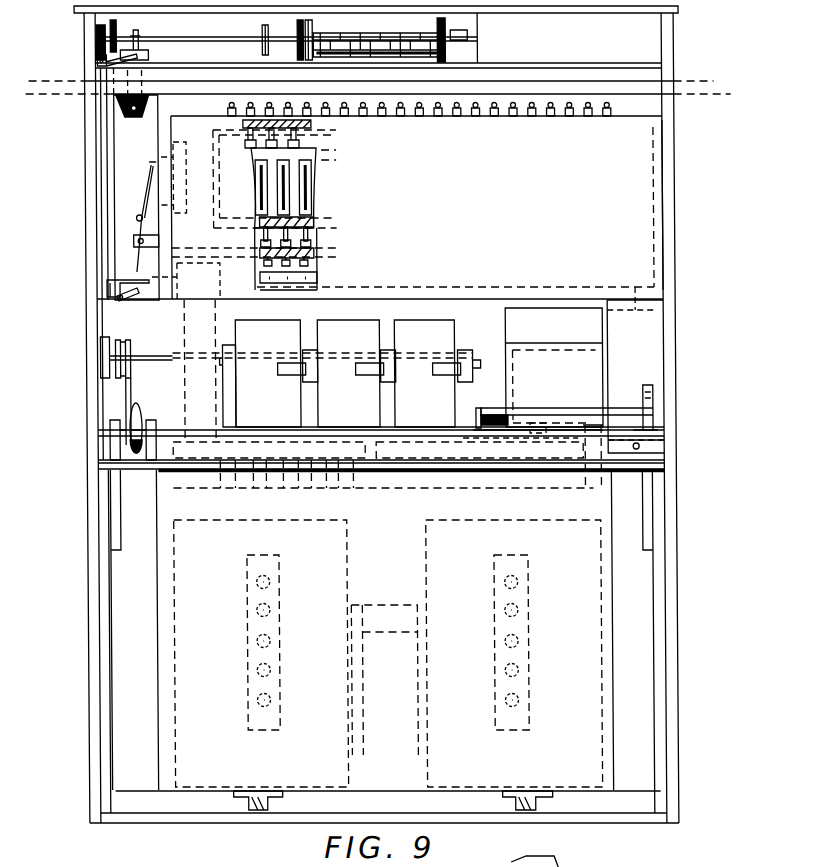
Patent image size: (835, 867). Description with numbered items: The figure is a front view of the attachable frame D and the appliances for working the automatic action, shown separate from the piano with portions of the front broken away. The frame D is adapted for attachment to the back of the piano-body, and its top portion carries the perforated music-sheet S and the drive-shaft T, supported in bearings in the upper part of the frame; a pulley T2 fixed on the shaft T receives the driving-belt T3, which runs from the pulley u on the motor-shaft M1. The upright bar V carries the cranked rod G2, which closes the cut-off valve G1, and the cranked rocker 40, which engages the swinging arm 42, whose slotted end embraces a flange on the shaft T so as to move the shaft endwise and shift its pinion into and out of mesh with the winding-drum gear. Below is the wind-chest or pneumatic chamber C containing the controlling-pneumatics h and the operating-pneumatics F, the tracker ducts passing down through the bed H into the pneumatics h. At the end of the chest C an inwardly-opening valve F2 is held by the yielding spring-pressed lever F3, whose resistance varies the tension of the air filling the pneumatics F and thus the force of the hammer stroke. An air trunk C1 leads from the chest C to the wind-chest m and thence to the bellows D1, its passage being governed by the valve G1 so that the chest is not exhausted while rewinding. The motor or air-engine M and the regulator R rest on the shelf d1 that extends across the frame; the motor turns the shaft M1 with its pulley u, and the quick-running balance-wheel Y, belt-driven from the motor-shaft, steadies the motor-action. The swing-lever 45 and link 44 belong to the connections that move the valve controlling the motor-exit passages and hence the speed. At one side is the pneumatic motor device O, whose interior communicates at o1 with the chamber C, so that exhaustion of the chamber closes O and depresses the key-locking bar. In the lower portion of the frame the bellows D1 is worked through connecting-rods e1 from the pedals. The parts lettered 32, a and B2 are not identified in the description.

The pulley T2 is at (110, 20).
The cranked rocker 40 is at (100, 60).
The swinging arm 42 is at (142, 45).
The drive-shaft T is at (291, 38).
The perforated music-sheet S is at (376, 33).
The upright bar V is at (100, 165).
The driving-belt T3 is at (136, 184).
The wind-chest or pneumatic chamber C is at (417, 201).
The frame D is at (668, 222).
The communication opening o1 is at (632, 286).
The inlet-valve F2 is at (185, 177).
The spring-pressed lever F3 is at (145, 176).
The operating-pneumatics F is at (308, 188).
The controlling-pneumatics h is at (308, 268).
The bed H is at (318, 280).
The cut-off valve G1 is at (186, 281).
The cranked rod or lever G2 is at (110, 275).
The pin 32 is at (128, 296).
The motor-shaft M1 is at (100, 362).
The pulley u is at (128, 355).
The balance-wheel Y is at (134, 428).
The air trunk or conductor C1 is at (200, 370).
The motor or air-engine M is at (418, 373).
The regulator R is at (554, 367).
The pneumatic motor device O is at (635, 376).
The swing-lever 45 is at (484, 410).
The link 44 is at (572, 412).
The wind-chest chamber m is at (378, 448).
The shelf d1 is at (650, 456).
The base a is at (385, 630).
The bellows D1 is at (388, 653).
The battery cells B2 is at (388, 642).
The connecting-rods e1 is at (524, 822).